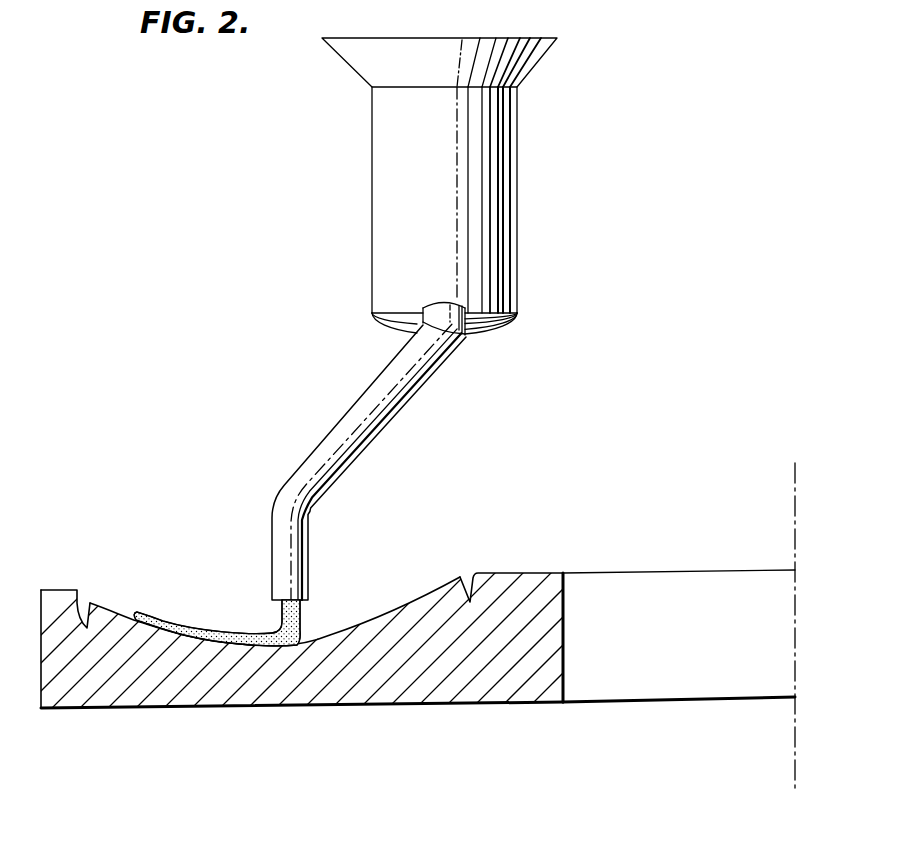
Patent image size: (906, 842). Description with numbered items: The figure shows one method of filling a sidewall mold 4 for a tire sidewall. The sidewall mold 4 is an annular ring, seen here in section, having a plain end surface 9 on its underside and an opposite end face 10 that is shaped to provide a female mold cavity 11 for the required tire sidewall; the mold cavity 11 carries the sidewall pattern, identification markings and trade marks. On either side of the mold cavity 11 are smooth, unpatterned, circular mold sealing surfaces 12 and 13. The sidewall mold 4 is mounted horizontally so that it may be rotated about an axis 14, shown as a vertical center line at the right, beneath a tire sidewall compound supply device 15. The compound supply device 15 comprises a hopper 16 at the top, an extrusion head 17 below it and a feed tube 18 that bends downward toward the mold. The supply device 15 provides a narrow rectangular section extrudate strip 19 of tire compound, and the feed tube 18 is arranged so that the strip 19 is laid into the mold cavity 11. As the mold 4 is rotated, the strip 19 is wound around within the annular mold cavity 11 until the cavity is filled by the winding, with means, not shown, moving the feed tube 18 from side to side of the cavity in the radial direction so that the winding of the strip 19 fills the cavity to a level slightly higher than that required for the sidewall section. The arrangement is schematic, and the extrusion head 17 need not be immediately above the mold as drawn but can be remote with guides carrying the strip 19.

The sidewall mold 4 is at (222, 693).
The plain end surface 9 is at (316, 709).
The end face 10 is at (101, 617).
The mold cavity 11 is at (336, 633).
The mold sealing surface 12 is at (63, 588).
The mold sealing surface 13 is at (490, 572).
The axis 14 is at (795, 700).
The tire sidewall compound supply device 15 is at (370, 139).
The hopper 16 is at (527, 53).
The extrusion head 17 is at (497, 175).
The feed tube 18 is at (334, 487).
The extrudate strip 19 is at (278, 620).